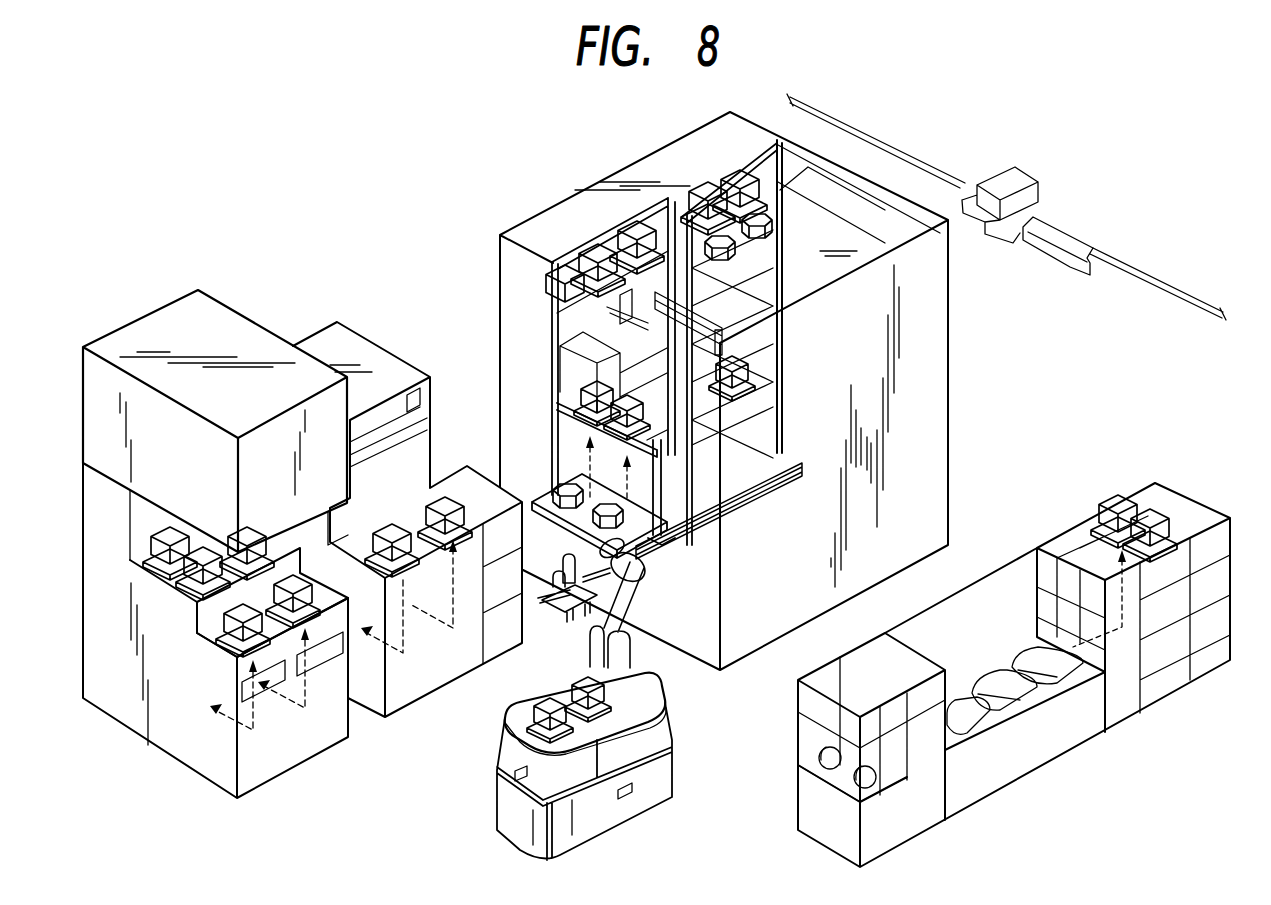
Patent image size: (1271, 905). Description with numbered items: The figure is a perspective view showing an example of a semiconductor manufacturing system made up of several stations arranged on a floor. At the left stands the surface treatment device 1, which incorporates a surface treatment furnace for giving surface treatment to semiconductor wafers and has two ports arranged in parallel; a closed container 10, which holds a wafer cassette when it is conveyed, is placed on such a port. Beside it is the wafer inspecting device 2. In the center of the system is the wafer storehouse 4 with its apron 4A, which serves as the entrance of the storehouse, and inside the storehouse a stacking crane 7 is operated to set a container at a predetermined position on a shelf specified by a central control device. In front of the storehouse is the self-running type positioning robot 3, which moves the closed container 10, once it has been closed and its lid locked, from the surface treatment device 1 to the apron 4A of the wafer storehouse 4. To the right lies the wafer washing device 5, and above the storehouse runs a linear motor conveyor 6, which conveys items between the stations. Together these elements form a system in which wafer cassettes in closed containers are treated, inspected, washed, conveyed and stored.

The surface treatment device 1 is at (148, 322).
The wafer inspecting device 2 is at (363, 342).
The self-running type positioning robot 3 is at (672, 730).
The wafer storehouse 4 is at (578, 202).
The apron of the wafer storehouse 4A is at (548, 512).
The wafer washing device 5 is at (1050, 757).
The linear motor conveyor 6 is at (1068, 237).
The stacking crane 7 is at (700, 487).
The closed container 10 is at (222, 626).